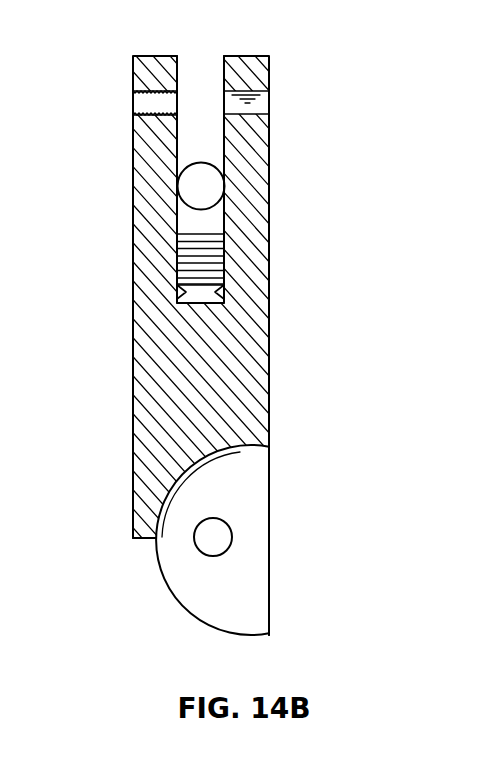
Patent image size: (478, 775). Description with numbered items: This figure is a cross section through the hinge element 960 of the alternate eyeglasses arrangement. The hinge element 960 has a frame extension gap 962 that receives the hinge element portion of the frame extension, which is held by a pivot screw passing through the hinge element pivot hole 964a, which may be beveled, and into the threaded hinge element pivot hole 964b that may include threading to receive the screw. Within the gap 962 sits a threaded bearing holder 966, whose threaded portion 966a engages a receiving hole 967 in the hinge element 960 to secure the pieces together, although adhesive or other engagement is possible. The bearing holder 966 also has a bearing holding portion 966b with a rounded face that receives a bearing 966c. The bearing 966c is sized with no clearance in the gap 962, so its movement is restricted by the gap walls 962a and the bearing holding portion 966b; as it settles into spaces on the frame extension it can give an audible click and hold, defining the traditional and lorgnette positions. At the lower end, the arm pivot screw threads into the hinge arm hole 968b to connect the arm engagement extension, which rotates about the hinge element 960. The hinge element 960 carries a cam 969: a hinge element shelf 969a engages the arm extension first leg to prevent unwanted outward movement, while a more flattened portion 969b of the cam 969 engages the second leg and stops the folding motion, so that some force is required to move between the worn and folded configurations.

The hinge element 960 is at (271, 360).
The frame extension gap 962 is at (198, 83).
The gap walls 962a is at (177, 146).
The hinge element pivot hole 964a is at (262, 103).
The threaded hinge element pivot hole 964b is at (145, 102).
The threaded bearing holder 966 is at (230, 250).
The threaded portion 966a is at (190, 262).
The bearing holding portion 966b is at (195, 222).
The bearing 966c is at (207, 183).
The receiving hole 967 is at (201, 293).
The hinge arm hole 968b is at (228, 522).
The cam 969 is at (205, 624).
The hinge element shelf 969a is at (145, 542).
The flattened portion 969b is at (270, 613).